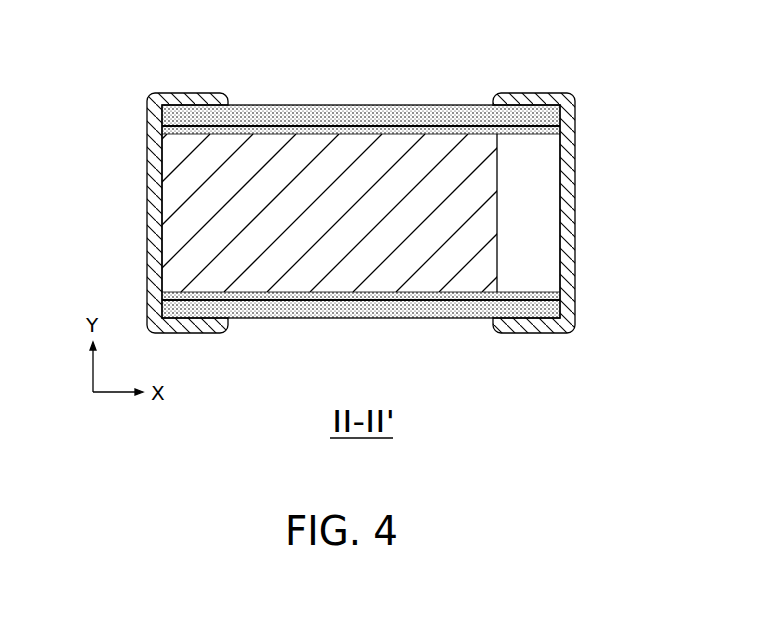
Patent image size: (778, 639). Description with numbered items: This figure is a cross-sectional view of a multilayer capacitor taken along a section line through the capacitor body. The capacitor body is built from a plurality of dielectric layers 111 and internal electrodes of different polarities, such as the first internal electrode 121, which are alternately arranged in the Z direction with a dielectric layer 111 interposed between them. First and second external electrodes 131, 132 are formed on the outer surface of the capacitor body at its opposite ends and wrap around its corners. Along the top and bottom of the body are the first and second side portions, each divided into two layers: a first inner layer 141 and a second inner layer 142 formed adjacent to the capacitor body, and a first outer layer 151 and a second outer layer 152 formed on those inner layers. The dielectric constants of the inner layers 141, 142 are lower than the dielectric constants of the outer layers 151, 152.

The dielectric layer 111 is at (548, 213).
The first internal electrode 121 is at (178, 216).
The first external electrode 131 is at (192, 93).
The second external electrode 132 is at (532, 93).
The first inner layer 141 is at (292, 125).
The second inner layer 142 is at (292, 301).
The first outer layer 151 is at (357, 107).
The second outer layer 152 is at (357, 319).